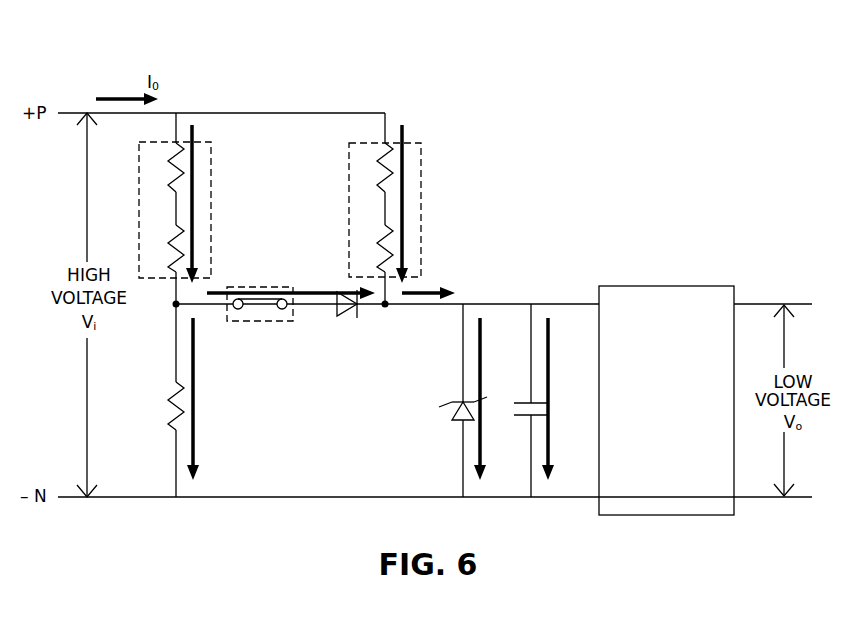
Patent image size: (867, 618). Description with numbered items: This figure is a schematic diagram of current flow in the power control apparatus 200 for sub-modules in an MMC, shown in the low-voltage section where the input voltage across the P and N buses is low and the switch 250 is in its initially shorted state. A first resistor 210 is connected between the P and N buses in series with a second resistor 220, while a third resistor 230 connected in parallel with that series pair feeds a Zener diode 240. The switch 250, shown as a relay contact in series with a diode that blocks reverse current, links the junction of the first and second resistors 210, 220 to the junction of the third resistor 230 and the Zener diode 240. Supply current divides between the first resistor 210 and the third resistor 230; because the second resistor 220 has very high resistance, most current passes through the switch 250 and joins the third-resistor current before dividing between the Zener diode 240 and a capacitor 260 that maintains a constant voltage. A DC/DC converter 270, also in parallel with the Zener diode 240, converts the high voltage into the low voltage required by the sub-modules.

The power control apparatus 200 is at (504, 86).
The first resistor 210 is at (211, 172).
The second resistor 220 is at (170, 405).
The third resistor 230 is at (421, 172).
The Zener diode 240 is at (455, 402).
The switch 250 is at (280, 322).
The capacitor 260 is at (551, 398).
The DC/DC converter 270 is at (667, 285).